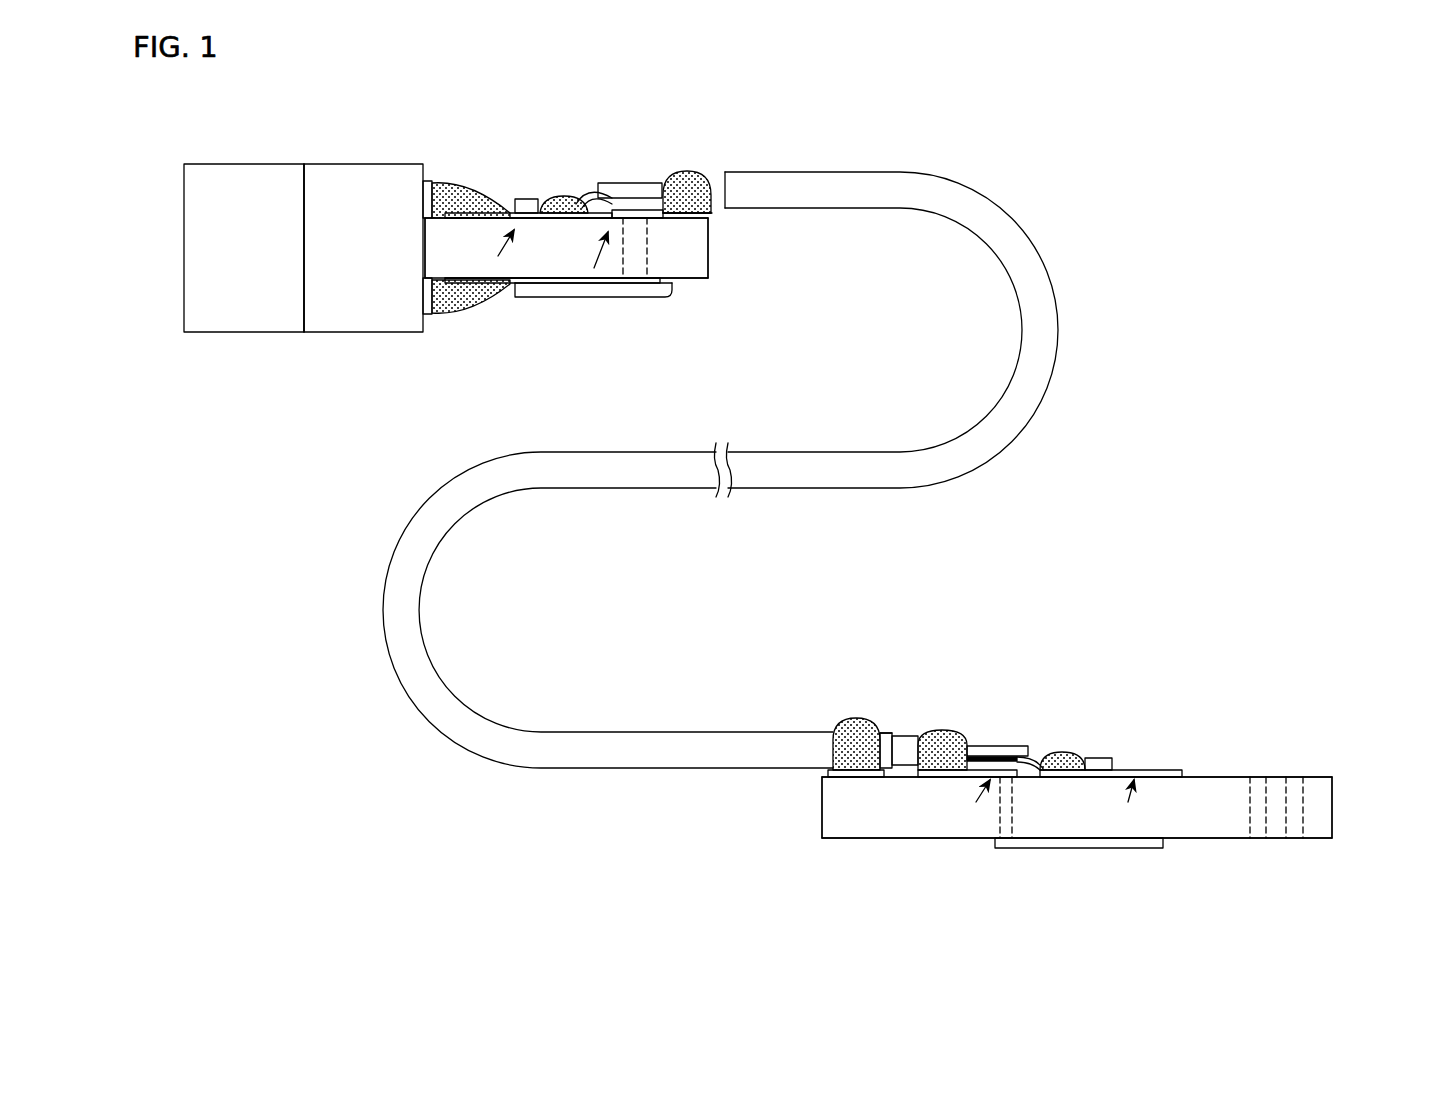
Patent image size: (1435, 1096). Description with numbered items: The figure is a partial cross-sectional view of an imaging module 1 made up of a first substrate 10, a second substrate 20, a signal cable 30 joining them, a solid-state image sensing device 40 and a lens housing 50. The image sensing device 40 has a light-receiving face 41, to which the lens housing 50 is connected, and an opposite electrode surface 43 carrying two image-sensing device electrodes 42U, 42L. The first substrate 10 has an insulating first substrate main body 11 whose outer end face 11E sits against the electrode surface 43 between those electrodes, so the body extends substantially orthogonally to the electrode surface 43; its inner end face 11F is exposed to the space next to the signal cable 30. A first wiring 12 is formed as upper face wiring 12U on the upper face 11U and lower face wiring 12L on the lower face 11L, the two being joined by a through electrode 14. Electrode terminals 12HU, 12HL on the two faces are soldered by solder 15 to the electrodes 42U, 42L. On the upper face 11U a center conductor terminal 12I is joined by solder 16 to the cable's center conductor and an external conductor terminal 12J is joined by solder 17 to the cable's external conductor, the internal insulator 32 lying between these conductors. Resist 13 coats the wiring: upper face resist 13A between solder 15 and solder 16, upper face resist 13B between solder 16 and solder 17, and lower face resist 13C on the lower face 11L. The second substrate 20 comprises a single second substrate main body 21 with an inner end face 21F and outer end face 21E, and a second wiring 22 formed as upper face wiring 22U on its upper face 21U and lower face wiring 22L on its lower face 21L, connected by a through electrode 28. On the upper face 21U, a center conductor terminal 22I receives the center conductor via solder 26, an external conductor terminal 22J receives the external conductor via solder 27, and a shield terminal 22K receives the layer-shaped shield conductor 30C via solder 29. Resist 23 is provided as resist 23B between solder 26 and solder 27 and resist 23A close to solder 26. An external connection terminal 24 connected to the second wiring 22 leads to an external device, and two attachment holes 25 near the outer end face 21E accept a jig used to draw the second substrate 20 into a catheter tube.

The imaging module 1 is at (1214, 94).
The first substrate 10 is at (716, 118).
The first substrate main body 11 is at (706, 276).
The upper face 11U is at (706, 220).
The lower face 11L is at (692, 280).
The inner end face 11F is at (706, 252).
The outer end face 11E is at (425, 232).
The first wiring 12 is at (612, 301).
The upper face wiring 12U is at (472, 220).
The lower face wiring 12L is at (536, 288).
The external conductor terminal 12J is at (712, 206).
The electrode terminal 12HU is at (442, 284).
The electrode terminal 12HL is at (475, 284).
The center conductor terminal 12I is at (560, 222).
The resist 13 is at (594, 220).
The upper face resist 13A is at (524, 198).
The upper face resist 13B is at (634, 209).
The lower face resist 13C is at (620, 298).
The through electrode 14 is at (623, 253).
The solder 15 is at (462, 196).
The solder 16 is at (560, 197).
The solder 17 is at (692, 174).
The second substrate 20 is at (1053, 720).
The second substrate main body 21 is at (1334, 806).
The upper face 21U is at (1155, 778).
The lower face 21L is at (1208, 838).
The inner end face 21F is at (822, 804).
The outer end face 21E is at (1334, 806).
The second wiring 22 is at (955, 836).
The shield terminal 22K is at (840, 776).
The external conductor terminal 22J is at (945, 778).
The upper face wiring 22U is at (970, 808).
The lower face wiring 22L is at (1012, 852).
The center conductor terminal 22I is at (1040, 782).
The resist 23 is at (1079, 695).
The resist 23A is at (1100, 760).
The resist 23B is at (992, 746).
The external connection terminal 24 is at (984, 836).
The attachment holes 25 is at (1290, 797).
The solder 26 is at (1066, 752).
The solder 27 is at (942, 732).
The through electrode 28 is at (1005, 757).
The solder 29 is at (847, 722).
The signal cable 30 is at (1032, 282).
The shield conductor 30C is at (888, 738).
The internal insulator 32 is at (638, 184).
The solid-state image sensing device 40 is at (366, 190).
The light-receiving face 41 is at (303, 188).
The image-sensing device electrode 42U is at (427, 192).
The image-sensing device electrode 42L is at (425, 298).
The electrode surface 43 is at (425, 236).
The lens housing 50 is at (242, 190).